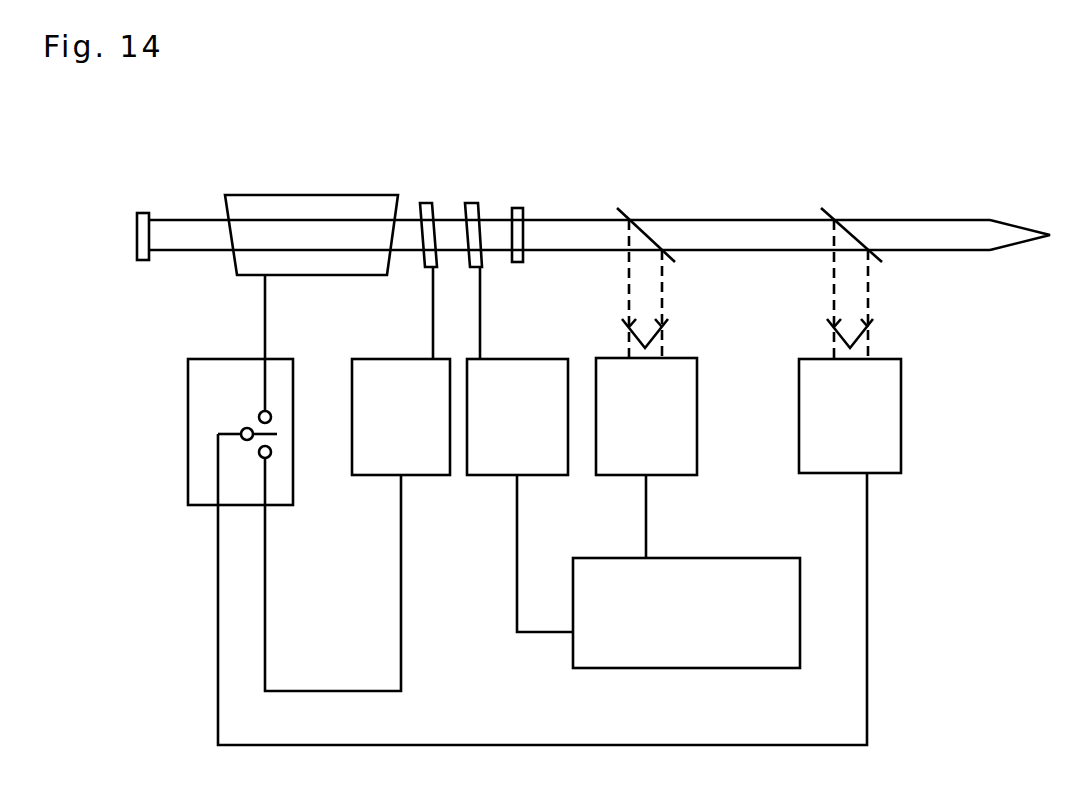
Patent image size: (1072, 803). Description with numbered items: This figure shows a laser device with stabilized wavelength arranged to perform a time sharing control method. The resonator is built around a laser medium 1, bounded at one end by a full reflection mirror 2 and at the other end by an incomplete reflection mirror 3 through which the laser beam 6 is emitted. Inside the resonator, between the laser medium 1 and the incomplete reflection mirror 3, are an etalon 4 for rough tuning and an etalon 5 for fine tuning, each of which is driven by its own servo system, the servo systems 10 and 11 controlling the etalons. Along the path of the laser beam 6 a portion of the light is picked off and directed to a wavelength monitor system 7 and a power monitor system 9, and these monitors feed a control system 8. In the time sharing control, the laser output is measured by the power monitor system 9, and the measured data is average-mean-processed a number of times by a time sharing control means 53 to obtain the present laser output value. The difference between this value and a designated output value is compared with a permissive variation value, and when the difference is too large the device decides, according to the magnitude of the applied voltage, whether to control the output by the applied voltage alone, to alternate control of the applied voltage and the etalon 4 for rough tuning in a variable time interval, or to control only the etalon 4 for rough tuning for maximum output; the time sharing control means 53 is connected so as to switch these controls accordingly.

The laser medium 1 is at (270, 195).
The full reflection mirror 2 is at (143, 213).
The incomplete reflection mirror 3 is at (517, 208).
The etalon for rough tuning 4 is at (428, 203).
The etalon for fine tuning 5 is at (470, 203).
The laser beam 6 is at (730, 220).
The wavelength monitor system 7 is at (685, 358).
The control system 8 is at (742, 558).
The power monitor system 9 is at (893, 358).
The servo system 10 is at (535, 359).
The servo system 11 is at (370, 359).
The time sharing control means 53 is at (210, 359).